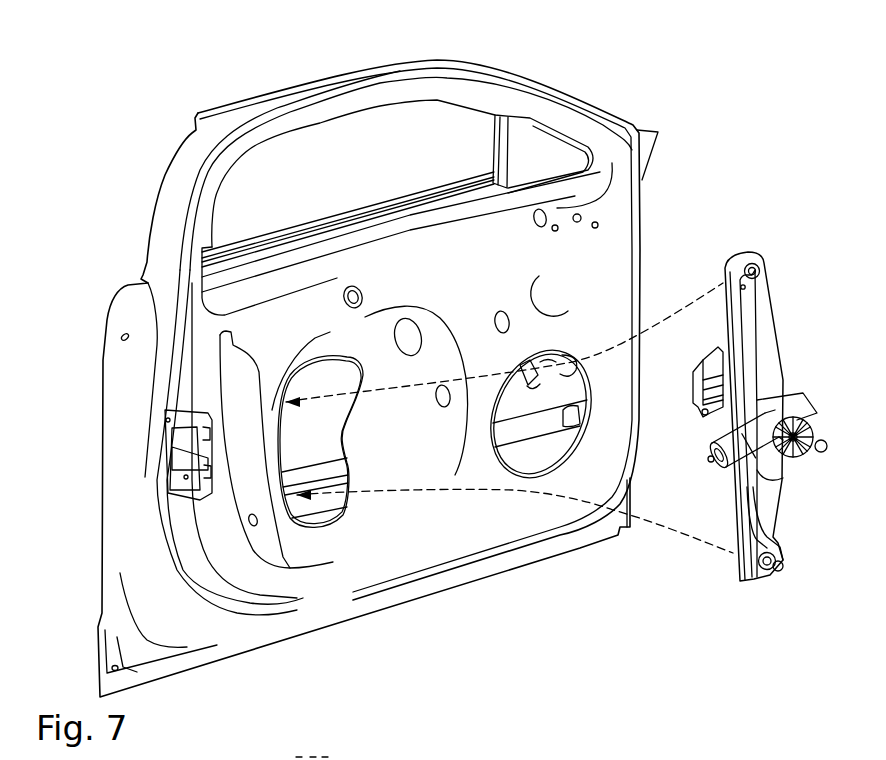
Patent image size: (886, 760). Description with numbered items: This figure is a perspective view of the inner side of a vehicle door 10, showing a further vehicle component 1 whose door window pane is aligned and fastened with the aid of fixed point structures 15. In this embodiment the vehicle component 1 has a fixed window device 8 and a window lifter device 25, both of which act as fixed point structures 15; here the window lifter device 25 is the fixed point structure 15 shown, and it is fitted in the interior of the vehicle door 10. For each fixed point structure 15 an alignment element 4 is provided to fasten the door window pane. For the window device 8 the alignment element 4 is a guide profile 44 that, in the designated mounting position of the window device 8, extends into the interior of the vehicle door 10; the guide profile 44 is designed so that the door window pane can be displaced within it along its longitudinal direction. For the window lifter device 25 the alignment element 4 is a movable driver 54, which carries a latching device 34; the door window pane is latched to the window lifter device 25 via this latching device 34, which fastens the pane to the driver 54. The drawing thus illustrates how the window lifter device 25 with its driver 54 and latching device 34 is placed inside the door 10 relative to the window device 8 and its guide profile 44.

The vehicle component 1 is at (136, 68).
The vehicle door 10 is at (163, 220).
The window device 8 is at (533, 143).
The guide profile 44 is at (535, 378).
The fixed point structure 15 is at (778, 247).
The alignment element 4 is at (703, 330).
The window lifter device 25 is at (743, 332).
The latching device 34 is at (687, 383).
The movable driver 54 is at (704, 415).